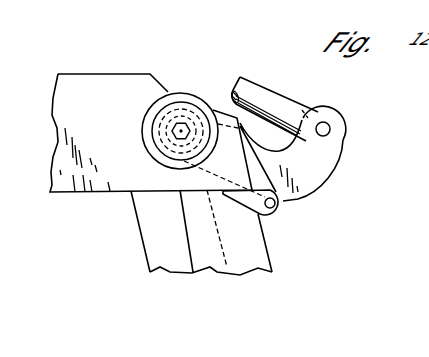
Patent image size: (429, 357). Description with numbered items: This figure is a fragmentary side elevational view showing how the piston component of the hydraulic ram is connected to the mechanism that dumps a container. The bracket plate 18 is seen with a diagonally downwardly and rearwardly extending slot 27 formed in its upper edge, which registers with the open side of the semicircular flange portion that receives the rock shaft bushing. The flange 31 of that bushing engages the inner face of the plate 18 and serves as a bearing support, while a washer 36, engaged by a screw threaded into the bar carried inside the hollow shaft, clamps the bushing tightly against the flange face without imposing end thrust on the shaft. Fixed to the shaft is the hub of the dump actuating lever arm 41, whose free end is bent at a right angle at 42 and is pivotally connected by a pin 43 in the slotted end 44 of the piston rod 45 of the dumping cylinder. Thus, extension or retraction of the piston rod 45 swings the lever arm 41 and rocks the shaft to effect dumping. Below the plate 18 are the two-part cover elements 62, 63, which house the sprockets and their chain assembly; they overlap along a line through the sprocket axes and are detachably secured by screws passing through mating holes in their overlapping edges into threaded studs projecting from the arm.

The plate 18 is at (112, 190).
The slot 27 is at (173, 92).
The flange 31 is at (147, 112).
The washer 36 is at (151, 130).
The dump actuating lever arm 41 is at (303, 197).
The right-angle bend 42 is at (332, 158).
The pin 43 is at (331, 129).
The slotted end 44 is at (323, 112).
The piston rod 45 is at (273, 93).
The cover element 62 is at (148, 238).
The cover element 63 is at (263, 252).